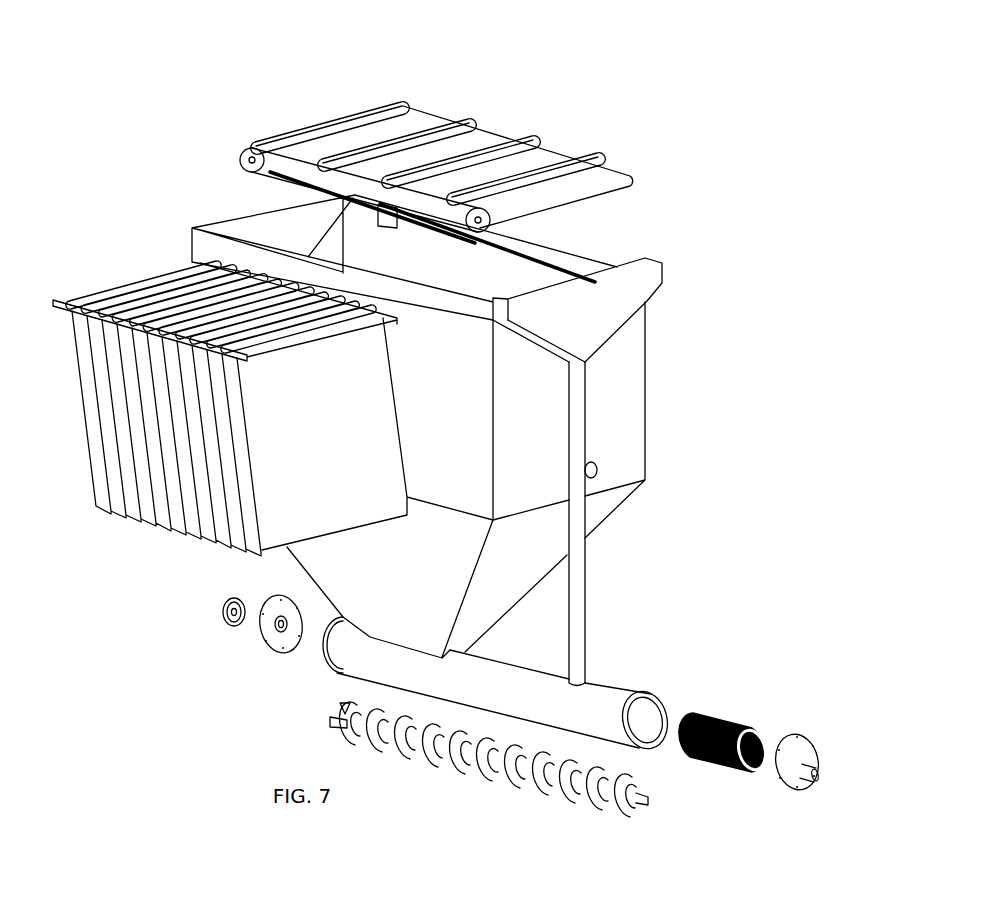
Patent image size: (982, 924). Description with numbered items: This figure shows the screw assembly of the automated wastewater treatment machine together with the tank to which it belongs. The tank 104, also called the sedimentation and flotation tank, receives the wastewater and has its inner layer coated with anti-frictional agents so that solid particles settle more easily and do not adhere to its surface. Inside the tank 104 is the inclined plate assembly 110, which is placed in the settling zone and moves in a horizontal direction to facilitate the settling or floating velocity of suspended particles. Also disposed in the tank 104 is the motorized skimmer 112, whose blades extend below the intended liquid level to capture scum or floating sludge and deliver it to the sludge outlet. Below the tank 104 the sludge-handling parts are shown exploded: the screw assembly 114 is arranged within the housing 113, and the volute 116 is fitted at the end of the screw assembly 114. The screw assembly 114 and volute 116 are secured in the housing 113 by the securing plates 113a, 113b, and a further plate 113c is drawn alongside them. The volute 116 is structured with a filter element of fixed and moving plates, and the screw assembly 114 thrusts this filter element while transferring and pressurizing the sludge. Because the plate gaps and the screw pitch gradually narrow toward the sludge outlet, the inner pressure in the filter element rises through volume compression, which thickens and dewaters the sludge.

The tank 104 is at (617, 268).
The inclined plate assembly 110 is at (97, 293).
The motorized skimmer 112 is at (486, 138).
The housing 113 is at (618, 697).
The securing plate 113a is at (782, 782).
The securing plate 113b is at (275, 650).
The bearing ring 113c is at (227, 625).
The screw assembly 114 is at (445, 760).
The volute 116 is at (708, 767).